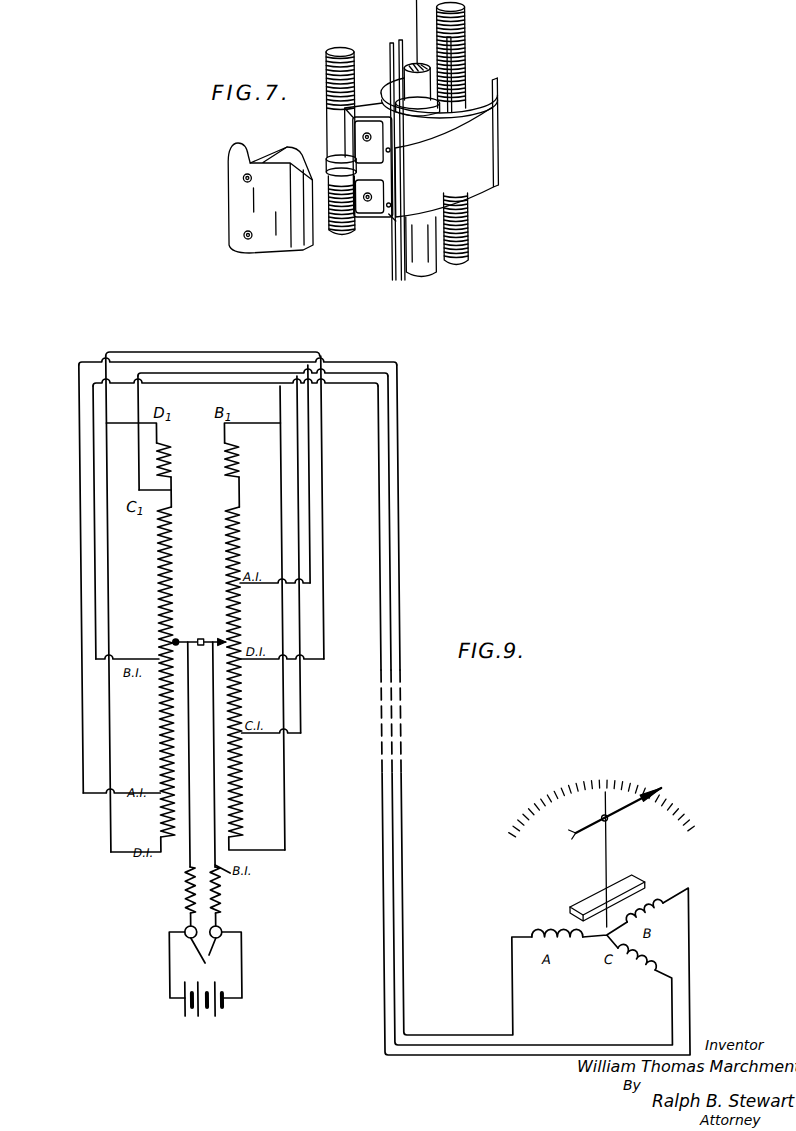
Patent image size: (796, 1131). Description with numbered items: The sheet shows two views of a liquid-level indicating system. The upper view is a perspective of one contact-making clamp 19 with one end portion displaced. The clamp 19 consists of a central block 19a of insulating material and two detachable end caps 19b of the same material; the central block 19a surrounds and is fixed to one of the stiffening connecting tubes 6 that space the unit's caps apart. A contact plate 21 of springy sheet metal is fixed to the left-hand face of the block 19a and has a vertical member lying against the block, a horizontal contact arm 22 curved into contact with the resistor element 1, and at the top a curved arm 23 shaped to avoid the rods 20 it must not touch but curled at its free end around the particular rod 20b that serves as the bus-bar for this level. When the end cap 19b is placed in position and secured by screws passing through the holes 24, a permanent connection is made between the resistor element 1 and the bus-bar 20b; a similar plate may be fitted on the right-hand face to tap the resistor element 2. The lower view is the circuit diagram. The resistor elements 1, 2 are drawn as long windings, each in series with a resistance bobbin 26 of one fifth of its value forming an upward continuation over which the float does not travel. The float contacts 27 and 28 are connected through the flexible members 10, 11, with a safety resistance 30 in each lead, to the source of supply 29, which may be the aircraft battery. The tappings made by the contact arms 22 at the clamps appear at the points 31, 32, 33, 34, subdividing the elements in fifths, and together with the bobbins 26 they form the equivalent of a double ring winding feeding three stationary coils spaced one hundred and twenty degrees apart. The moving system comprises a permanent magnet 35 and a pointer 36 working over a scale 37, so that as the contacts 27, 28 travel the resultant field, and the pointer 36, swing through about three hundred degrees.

In FIG. 7, the resistor element 1 is at (327, 73).
In FIG. 9, the resistor element 1 is at (156, 611).
In FIG. 7, the resistor element 2 is at (468, 34).
In FIG. 9, the resistor element 2 is at (239, 567).
In FIG. 7, the connecting tube 6 is at (422, 262).
In FIG. 9, the flexible member 10 is at (184, 858).
In FIG. 9, the flexible member 11 is at (230, 790).
In FIG. 7, the clamp 19 is at (443, 190).
In FIG. 7, the central block 19a is at (393, 217).
In FIG. 7, the end cap 19b is at (292, 248).
In FIG. 7, the rod 20 is at (401, 40).
In FIG. 7, the rod 20b is at (462, 80).
In FIG. 7, the contact plate 21 is at (380, 178).
In FIG. 7, the contact arm 22 is at (345, 165).
In FIG. 7, the curved arm 23 is at (386, 98).
In FIG. 7, the holes 24 is at (243, 234).
In FIG. 9, the resistance bobbin 26 is at (222, 467).
In FIG. 9, the contact 27 is at (175, 637).
In FIG. 9, the contact 28 is at (220, 637).
In FIG. 9, the source of supply 29 is at (205, 974).
In FIG. 9, the safety resistance 30 is at (216, 905).
In FIG. 9, the tapping 31 is at (239, 590).
In FIG. 9, the tapping 32 is at (156, 660).
In FIG. 9, the tapping 33 is at (239, 738).
In FIG. 9, the tapping 34 is at (156, 800).
In FIG. 9, the permanent magnet 35 is at (562, 905).
In FIG. 9, the pointer 36 is at (608, 816).
In FIG. 9, the scale 37 is at (536, 793).